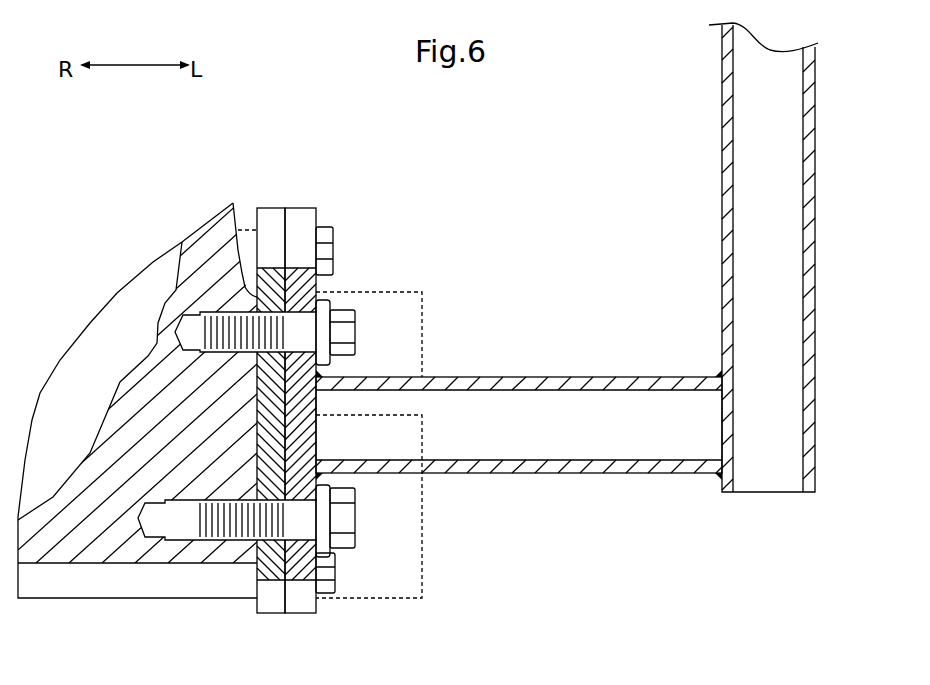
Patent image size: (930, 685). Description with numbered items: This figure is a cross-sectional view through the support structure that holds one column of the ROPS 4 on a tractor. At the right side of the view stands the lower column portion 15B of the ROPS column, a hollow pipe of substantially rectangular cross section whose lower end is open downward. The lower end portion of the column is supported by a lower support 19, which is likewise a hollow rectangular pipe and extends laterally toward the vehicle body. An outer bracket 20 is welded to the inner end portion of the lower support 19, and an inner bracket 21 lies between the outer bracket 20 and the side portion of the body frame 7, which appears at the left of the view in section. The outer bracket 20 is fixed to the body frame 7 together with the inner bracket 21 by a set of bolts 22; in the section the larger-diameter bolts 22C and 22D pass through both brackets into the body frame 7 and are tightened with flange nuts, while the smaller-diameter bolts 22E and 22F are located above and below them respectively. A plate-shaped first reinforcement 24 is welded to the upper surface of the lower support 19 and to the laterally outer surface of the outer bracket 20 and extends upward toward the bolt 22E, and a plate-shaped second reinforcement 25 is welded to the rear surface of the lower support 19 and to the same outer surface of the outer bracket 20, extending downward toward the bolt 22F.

The ROPS 4 is at (818, 115).
The body frame 7 is at (143, 563).
The lower column portion 15B is at (815, 178).
The lower support 19 is at (596, 377).
The outer bracket 20 is at (303, 213).
The inner bracket 21 is at (268, 212).
The bolts 22 is at (227, 426).
The bolt 22C is at (345, 327).
The bolt 22D is at (345, 515).
The bolt 22E is at (329, 248).
The bolt 22F is at (330, 573).
The first reinforcement 24 is at (405, 300).
The second reinforcement 25 is at (372, 590).